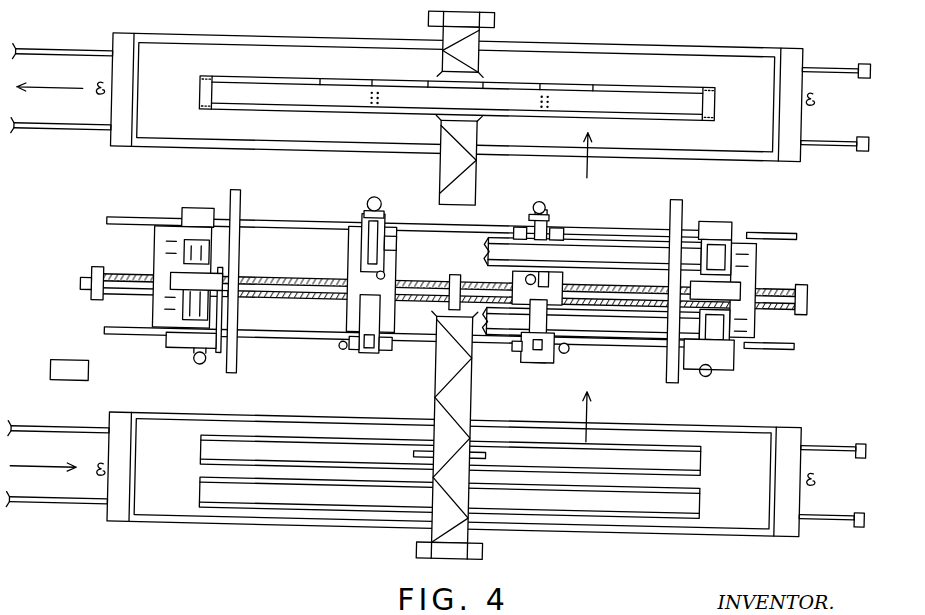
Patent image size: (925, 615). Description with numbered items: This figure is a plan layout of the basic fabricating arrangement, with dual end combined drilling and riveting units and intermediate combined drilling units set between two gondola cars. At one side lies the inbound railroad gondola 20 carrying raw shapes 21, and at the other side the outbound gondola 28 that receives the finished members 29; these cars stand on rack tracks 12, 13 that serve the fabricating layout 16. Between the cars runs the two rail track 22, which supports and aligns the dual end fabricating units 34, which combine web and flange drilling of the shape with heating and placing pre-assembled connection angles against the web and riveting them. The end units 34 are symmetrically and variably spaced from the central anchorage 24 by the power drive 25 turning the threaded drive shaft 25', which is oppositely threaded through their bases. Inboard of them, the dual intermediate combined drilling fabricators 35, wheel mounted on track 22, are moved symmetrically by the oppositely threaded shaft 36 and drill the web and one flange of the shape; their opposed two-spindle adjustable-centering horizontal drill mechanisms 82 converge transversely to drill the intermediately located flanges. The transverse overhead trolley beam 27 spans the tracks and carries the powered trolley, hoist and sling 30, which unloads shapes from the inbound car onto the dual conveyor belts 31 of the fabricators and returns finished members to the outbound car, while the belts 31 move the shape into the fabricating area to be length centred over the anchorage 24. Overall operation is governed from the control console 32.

The rack track 12 is at (846, 492).
The rack track 13 is at (842, 117).
The fabricating layout 16 is at (162, 359).
The inbound railroad gondola 20 is at (645, 521).
The raw shapes 21 is at (203, 445).
The two rail track 22 is at (329, 325).
The central anchorage 24 is at (452, 266).
The power drive 25 is at (78, 277).
The threaded drive shaft 25' is at (448, 274).
The transverse overhead trolley beam 27 is at (467, 187).
The outbound gondola 28 is at (640, 46).
The finished members 29 is at (240, 76).
The powered trolley, hoist and sling 30 is at (493, 448).
The dual conveyor belts 31 is at (238, 211).
The control console 32 is at (52, 372).
The dual end fabricating units 34 is at (155, 267).
The dual intermediate combined drilling fabricators 35 is at (390, 317).
The oppositely threaded shaft 36 is at (305, 297).
The two-spindle adjustable-centering horizontal drill mechanisms 82 is at (378, 217).